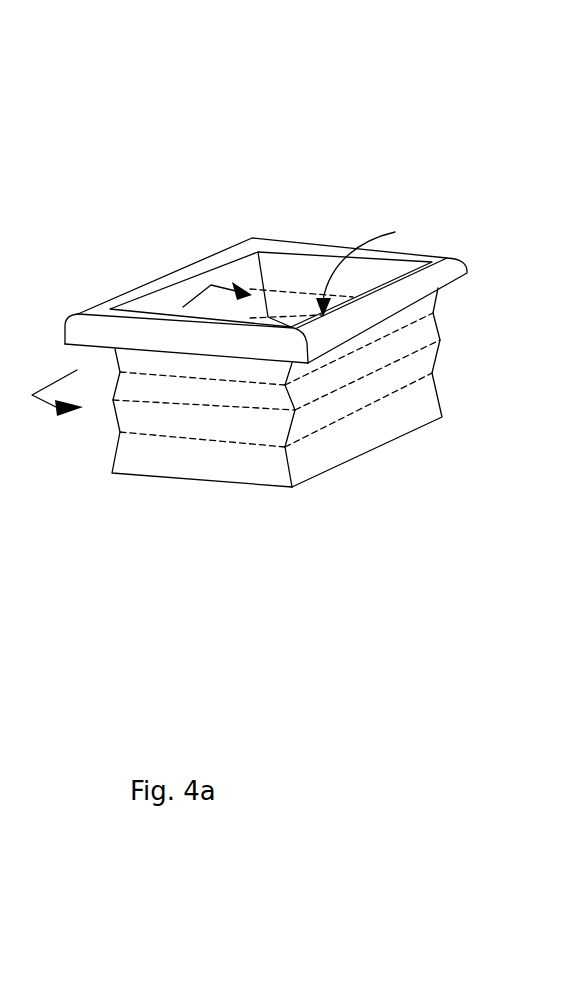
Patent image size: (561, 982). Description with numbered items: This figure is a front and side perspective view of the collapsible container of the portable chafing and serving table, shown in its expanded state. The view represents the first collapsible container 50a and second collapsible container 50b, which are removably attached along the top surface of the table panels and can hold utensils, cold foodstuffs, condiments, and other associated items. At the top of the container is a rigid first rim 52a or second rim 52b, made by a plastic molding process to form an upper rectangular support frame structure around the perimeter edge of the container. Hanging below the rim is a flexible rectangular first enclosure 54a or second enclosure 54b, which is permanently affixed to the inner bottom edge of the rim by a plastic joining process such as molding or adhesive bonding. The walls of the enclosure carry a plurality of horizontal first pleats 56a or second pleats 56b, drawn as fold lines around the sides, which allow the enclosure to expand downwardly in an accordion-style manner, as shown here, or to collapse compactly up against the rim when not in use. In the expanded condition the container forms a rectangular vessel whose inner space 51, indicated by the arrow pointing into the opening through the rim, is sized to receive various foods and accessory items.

The first collapsible container 50a is at (294, 354).
The second collapsible container 50b is at (308, 207).
The inner space 51 is at (372, 267).
The first rim 52a is at (263, 255).
The second rim 52b is at (332, 348).
The first enclosure 54a is at (199, 499).
The second enclosure 54b is at (192, 520).
The first pleats 56a is at (421, 424).
The second pleats 56b is at (368, 385).